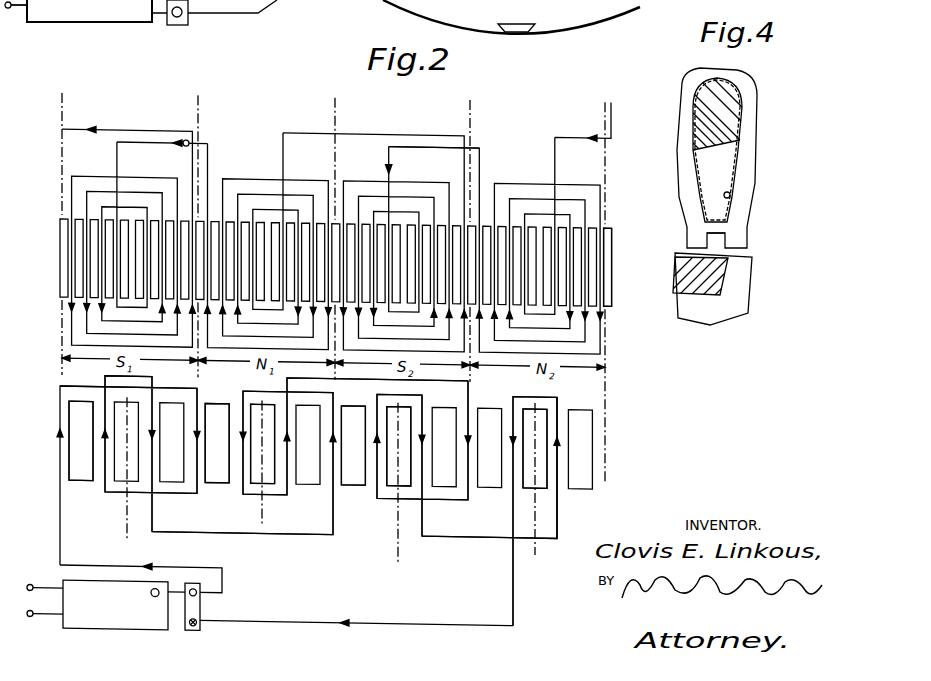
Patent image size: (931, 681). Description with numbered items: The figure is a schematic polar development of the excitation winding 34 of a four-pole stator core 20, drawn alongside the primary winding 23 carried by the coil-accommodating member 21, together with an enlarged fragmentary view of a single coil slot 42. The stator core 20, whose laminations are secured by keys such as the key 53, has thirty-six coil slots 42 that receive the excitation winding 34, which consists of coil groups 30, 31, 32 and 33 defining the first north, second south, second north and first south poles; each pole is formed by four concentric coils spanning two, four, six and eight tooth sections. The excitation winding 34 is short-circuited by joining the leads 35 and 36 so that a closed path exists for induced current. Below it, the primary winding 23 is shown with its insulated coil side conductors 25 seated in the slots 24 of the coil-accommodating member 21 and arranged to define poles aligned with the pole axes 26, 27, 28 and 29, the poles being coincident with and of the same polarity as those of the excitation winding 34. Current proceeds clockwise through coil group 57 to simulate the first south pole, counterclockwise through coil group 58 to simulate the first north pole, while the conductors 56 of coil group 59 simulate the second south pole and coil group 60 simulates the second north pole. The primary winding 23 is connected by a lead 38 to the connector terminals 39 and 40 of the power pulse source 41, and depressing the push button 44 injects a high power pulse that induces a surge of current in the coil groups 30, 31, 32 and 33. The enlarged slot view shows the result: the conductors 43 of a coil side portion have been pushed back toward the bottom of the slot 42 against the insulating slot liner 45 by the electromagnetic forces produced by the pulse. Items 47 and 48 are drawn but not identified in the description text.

In FIG. 2, the stator core 20 is at (616, 252).
In FIG. 4, the stator core 20 is at (752, 80).
In FIG. 2, the coil-accommodating member 21 is at (594, 430).
In FIG. 2, the primary winding 23 is at (338, 398).
In FIG. 2, the slots 24 is at (230, 460).
In FIG. 4, the slots 24 is at (730, 282).
In FIG. 2, the coil side conductors 25 is at (375, 462).
In FIG. 4, the coil side conductors 25 is at (685, 278).
In FIG. 2, the pole axis 26 is at (262, 510).
In FIG. 2, the pole axis 27 is at (398, 552).
In FIG. 2, the pole axis 28 is at (538, 515).
In FIG. 2, the pole axis 29 is at (127, 517).
In FIG. 2, the coil group 30 is at (285, 176).
In FIG. 2, the coil group 31 is at (380, 176).
In FIG. 2, the coil group 32 is at (528, 176).
In FIG. 2, the coil group 33 is at (95, 176).
In FIG. 2, the excitation winding 34 is at (478, 136).
In FIG. 2, the lead 35 is at (160, 140).
In FIG. 2, the lead 36 is at (200, 138).
In FIG. 2, the lead 38 is at (304, 616).
In FIG. 2, the connector terminal 39 is at (194, 588).
In FIG. 2, the connector terminal 40 is at (201, 626).
In FIG. 2, the power pulse source 41 is at (60, 583).
In FIG. 2, the coil slot 42 is at (605, 219).
In FIG. 4, the coil slot 42 is at (737, 168).
In FIG. 4, the conductors 43 is at (742, 115).
In FIG. 2, the push button 44 is at (155, 596).
In FIG. 4, the insulating slot liner 45 is at (732, 193).
In FIG. 2, the supply lead 47 is at (8, 8).
In FIG. 4, the slot opening 48 is at (715, 238).
In FIG. 2, the key 53 is at (520, 33).
In FIG. 2, the conductors 56 is at (562, 418).
In FIG. 2, the coil group 57 is at (83, 386).
In FIG. 2, the coil group 58 is at (247, 387).
In FIG. 2, the coil group 59 is at (412, 387).
In FIG. 2, the coil group 60 is at (525, 389).